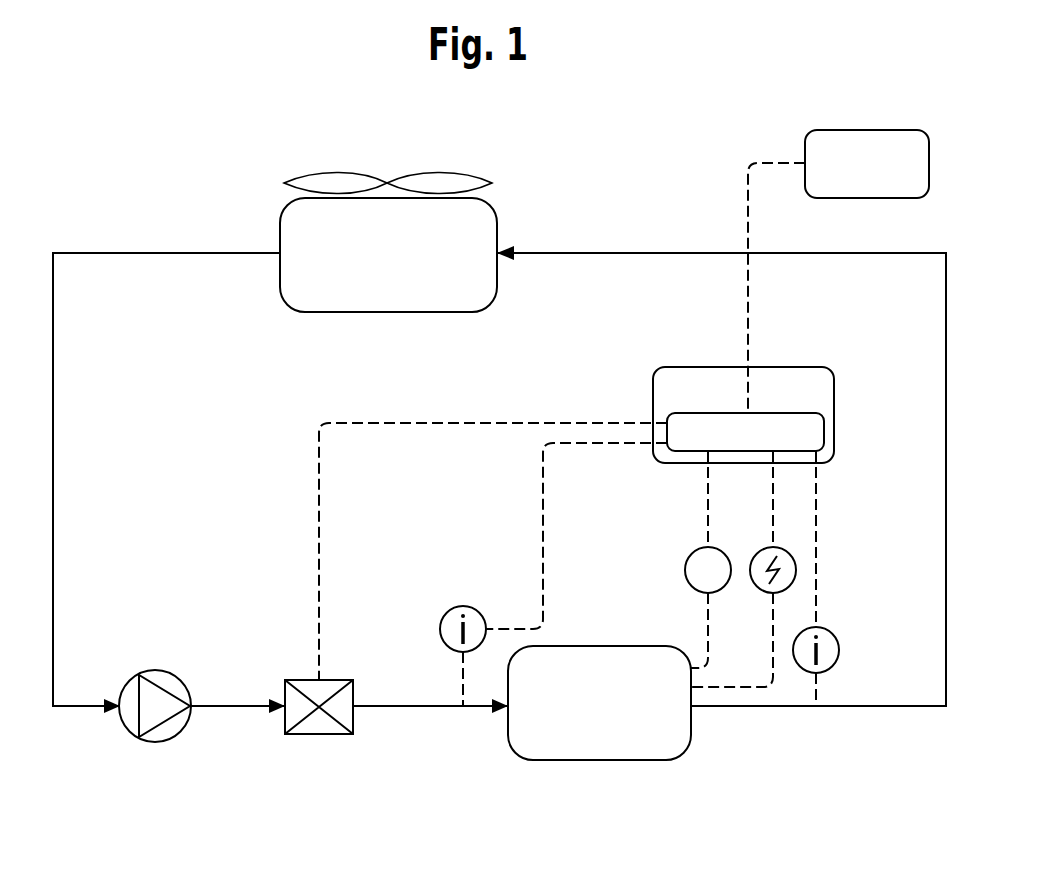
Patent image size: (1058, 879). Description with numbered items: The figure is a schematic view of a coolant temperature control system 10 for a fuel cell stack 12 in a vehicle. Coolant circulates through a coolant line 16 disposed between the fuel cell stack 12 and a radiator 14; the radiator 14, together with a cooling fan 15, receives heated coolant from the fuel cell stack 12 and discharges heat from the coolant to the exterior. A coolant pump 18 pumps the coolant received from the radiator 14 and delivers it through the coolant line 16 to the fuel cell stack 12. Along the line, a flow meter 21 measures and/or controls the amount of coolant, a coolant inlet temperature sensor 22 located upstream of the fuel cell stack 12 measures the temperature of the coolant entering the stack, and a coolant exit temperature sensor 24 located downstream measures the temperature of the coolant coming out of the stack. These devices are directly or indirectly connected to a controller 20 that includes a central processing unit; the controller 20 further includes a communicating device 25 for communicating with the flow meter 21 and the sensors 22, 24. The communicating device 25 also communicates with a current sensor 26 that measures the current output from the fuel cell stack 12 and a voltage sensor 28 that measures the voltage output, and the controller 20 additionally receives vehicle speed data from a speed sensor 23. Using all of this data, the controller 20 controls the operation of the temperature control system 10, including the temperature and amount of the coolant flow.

The coolant temperature control system 10 is at (687, 95).
The fuel cell stack 12 is at (653, 760).
The radiator 14 is at (487, 217).
The cooling fan 15 is at (443, 175).
The coolant line 16 is at (888, 252).
The coolant pump 18 is at (165, 743).
The controller 20 is at (813, 366).
The flow meter 21 is at (330, 735).
The coolant inlet temperature sensor 22 is at (452, 606).
The speed sensor 23 is at (890, 128).
The coolant exit temperature sensor 24 is at (837, 642).
The communicating device 25 is at (820, 438).
The current sensor 26 is at (685, 563).
The voltage sensor 28 is at (790, 553).